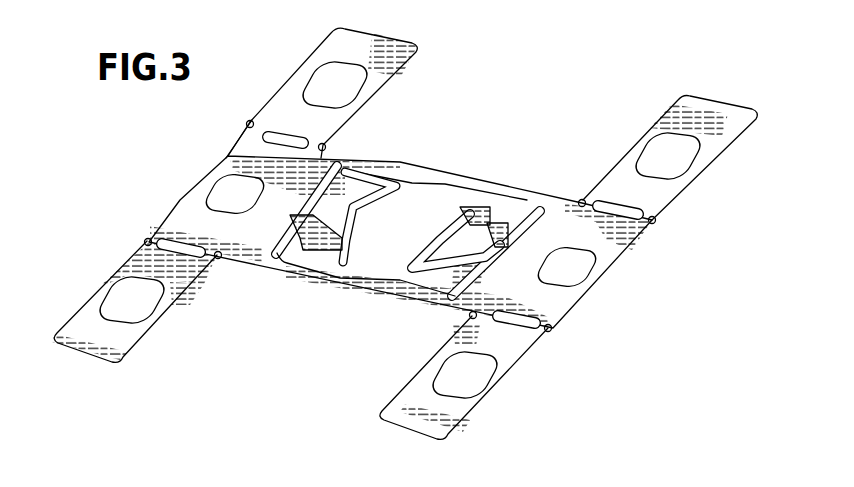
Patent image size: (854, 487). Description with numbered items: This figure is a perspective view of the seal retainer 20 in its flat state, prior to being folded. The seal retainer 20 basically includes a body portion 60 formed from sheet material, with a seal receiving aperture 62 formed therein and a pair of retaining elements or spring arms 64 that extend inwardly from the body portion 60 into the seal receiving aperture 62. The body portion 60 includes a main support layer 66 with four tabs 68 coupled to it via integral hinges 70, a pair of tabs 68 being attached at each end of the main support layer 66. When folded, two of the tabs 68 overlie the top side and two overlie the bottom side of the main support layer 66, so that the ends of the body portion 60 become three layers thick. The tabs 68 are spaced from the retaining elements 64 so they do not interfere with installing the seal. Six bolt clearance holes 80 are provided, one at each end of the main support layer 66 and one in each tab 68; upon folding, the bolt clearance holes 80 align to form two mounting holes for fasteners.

The seal retainer 20 is at (645, 252).
The body portion 60 is at (560, 308).
The seal receiving aperture 62 is at (414, 182).
The retaining elements or spring arms 64 is at (469, 212).
The main support layer 66 is at (237, 143).
The tabs 68 is at (405, 40).
The integral hinges 70 is at (250, 121).
The bolt clearance holes 80 is at (305, 80).